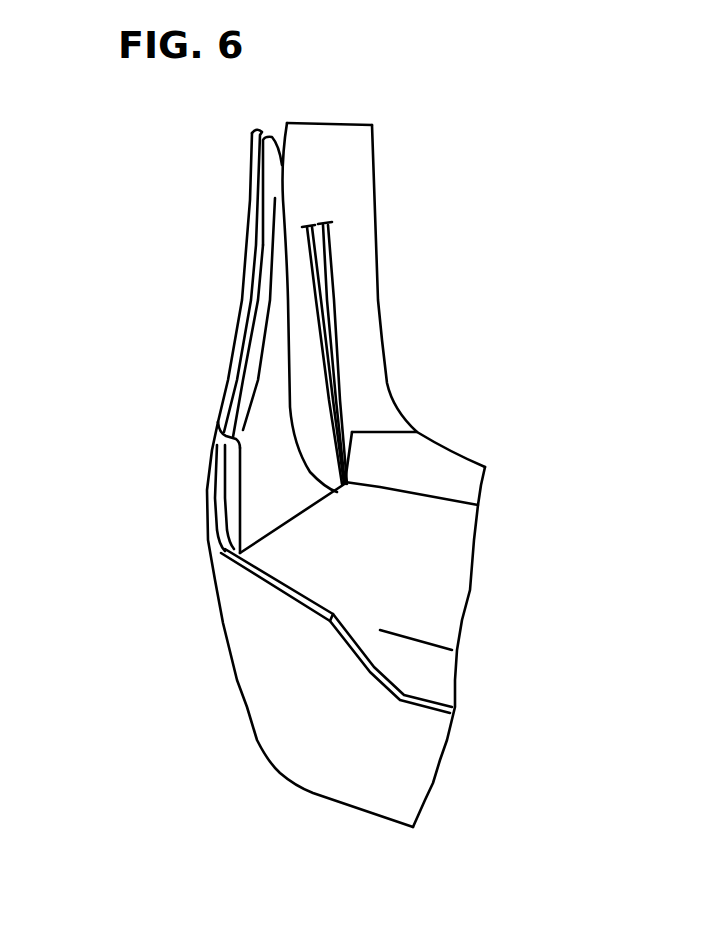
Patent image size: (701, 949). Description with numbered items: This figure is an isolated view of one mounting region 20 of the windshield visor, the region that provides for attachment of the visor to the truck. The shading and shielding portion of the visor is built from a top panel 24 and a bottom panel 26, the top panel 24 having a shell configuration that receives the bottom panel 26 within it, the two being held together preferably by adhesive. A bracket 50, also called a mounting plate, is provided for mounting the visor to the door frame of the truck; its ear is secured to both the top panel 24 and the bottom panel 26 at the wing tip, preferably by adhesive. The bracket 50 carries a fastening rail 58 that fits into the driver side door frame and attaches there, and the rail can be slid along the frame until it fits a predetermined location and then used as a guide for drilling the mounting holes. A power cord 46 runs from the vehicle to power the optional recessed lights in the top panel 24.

The mounting region 20 is at (150, 333).
The top panel 24 is at (457, 563).
The bottom panel 26 is at (253, 668).
The power cord 46 is at (337, 318).
The bracket 50 is at (270, 483).
The fastening rail 58 is at (252, 255).